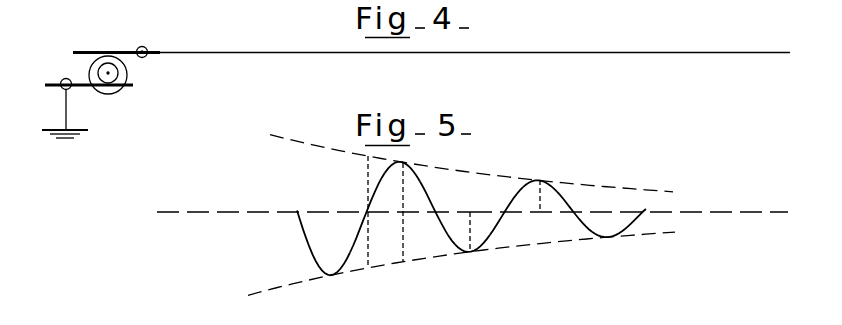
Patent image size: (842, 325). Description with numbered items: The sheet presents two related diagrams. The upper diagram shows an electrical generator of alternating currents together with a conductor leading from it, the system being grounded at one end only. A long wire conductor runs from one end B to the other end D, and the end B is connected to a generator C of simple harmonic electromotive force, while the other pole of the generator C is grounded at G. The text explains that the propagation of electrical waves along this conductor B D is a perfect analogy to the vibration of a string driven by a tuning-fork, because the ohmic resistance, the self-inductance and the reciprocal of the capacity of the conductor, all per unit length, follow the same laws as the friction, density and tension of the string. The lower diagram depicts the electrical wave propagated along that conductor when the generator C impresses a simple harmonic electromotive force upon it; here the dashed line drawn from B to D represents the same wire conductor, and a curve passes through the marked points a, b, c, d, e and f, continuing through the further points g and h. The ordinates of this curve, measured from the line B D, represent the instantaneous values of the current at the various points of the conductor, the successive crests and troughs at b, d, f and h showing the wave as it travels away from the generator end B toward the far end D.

In FIG. 4, the end of wire conductor B is at (149, 51).
In FIG. 5, the end of wire conductor B is at (308, 197).
In FIG. 4, the generator C is at (92, 69).
In FIG. 4, the end of wire conductor D is at (646, 39).
In FIG. 5, the end of wire conductor D is at (629, 197).
In FIG. 4, the ground G is at (63, 128).
In FIG. 5, the point of current curve a is at (371, 212).
In FIG. 5, the point of current curve b is at (407, 202).
In FIG. 5, the point of current curve c is at (439, 213).
In FIG. 5, the point of current curve d is at (472, 243).
In FIG. 5, the point of current curve e is at (506, 211).
In FIG. 5, the point of current curve f is at (542, 183).
In FIG. 5, the g'' curve zero-crossing point g is at (580, 211).
In FIG. 5, the h'' curve minimum point h is at (619, 236).